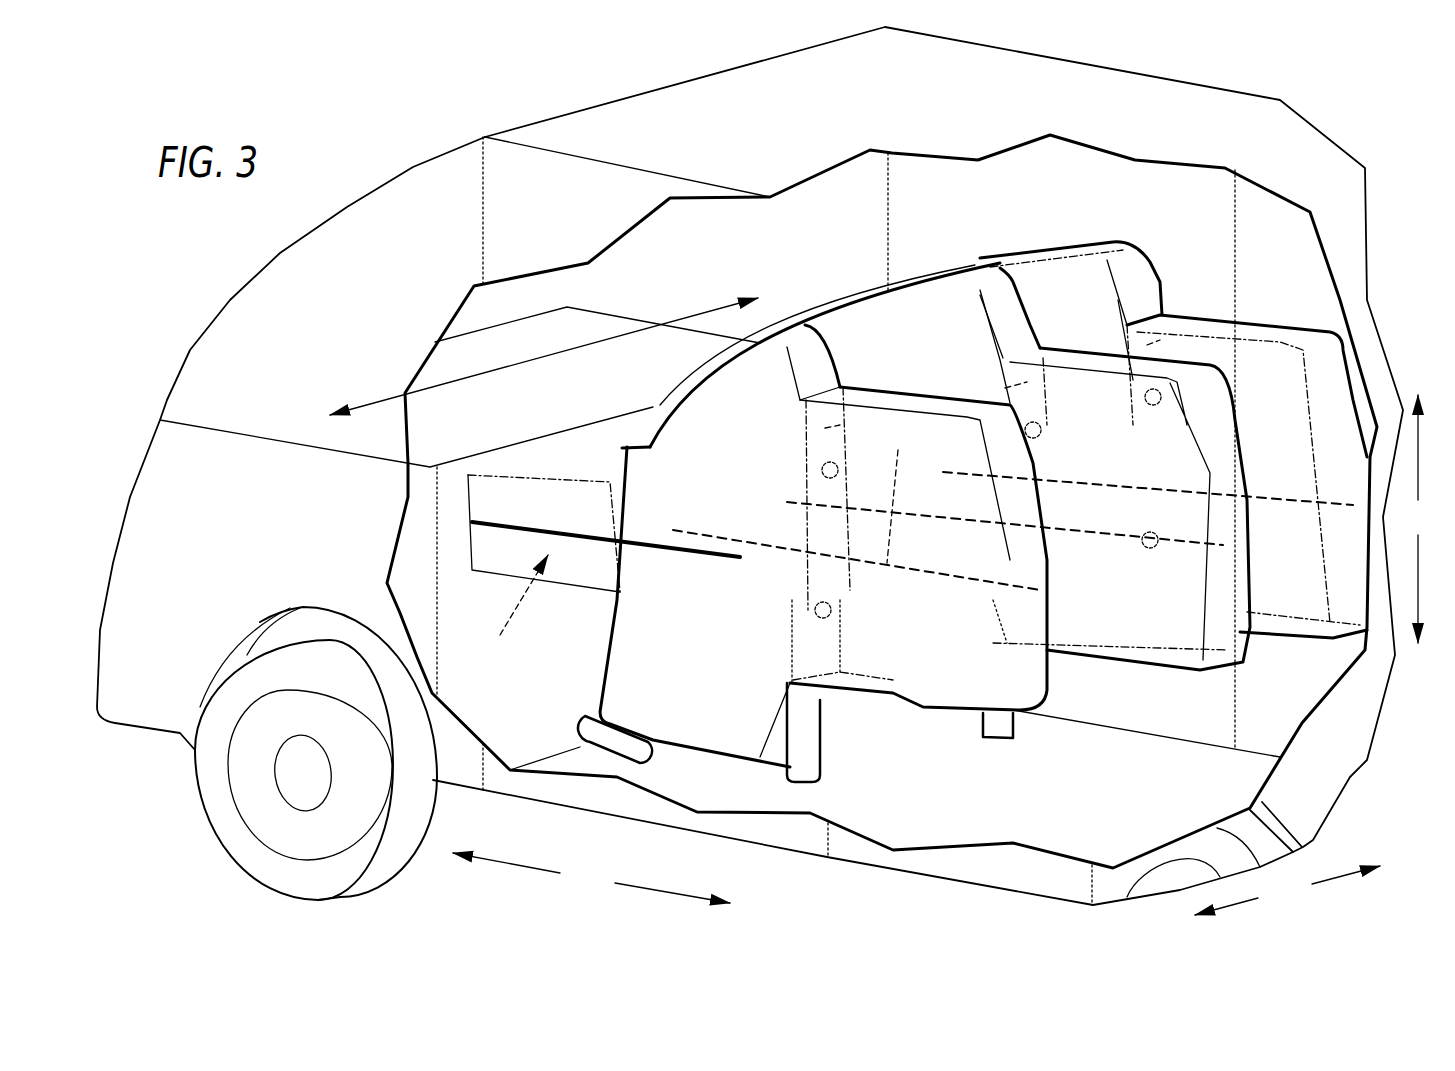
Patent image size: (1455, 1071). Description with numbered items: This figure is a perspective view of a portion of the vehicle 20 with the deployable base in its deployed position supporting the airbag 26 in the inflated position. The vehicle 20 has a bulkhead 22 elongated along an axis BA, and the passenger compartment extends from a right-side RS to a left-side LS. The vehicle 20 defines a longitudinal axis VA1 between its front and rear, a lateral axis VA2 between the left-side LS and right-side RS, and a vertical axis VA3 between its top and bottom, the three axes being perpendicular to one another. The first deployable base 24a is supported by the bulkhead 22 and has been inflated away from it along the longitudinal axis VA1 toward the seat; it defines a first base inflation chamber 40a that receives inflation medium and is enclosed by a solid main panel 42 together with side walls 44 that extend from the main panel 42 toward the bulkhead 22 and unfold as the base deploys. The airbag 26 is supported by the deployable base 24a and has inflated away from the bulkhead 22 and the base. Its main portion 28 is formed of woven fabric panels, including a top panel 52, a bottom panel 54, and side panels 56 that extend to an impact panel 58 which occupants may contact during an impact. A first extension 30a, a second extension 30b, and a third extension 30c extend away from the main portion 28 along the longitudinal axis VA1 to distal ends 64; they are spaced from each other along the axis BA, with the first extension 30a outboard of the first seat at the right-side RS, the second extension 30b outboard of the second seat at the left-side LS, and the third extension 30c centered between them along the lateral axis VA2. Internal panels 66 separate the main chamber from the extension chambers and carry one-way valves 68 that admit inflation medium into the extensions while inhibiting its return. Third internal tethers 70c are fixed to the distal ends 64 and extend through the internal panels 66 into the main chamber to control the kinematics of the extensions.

The vehicle 20 is at (415, 108).
The bulkhead 22 is at (582, 322).
The first deployable base 24a is at (543, 468).
The airbag 26 is at (982, 220).
The main portion 28 is at (877, 340).
The first extension 30a is at (796, 528).
The second extension 30b is at (1170, 667).
The third extension 30c is at (1297, 638).
The first base inflation chamber 40a is at (501, 602).
The main panel 42 is at (623, 497).
The side walls 44 is at (495, 545).
The top panel 52 is at (901, 293).
The bottom panel 54 is at (690, 750).
The side panels 56 is at (650, 660).
The impact panel 58 is at (950, 320).
The distal ends 64 is at (1023, 670).
The internal panels 66 is at (825, 428).
The one-way valves 68 is at (810, 480).
The third internal tethers 70c is at (975, 475).
The right-side RS is at (1046, 55).
The left-side LS is at (652, 165).
The axis BA is at (385, 397).
The longitudinal axis VA1 is at (591, 878).
The lateral axis VA2 is at (1287, 890).
The vertical axis VA3 is at (1418, 519).